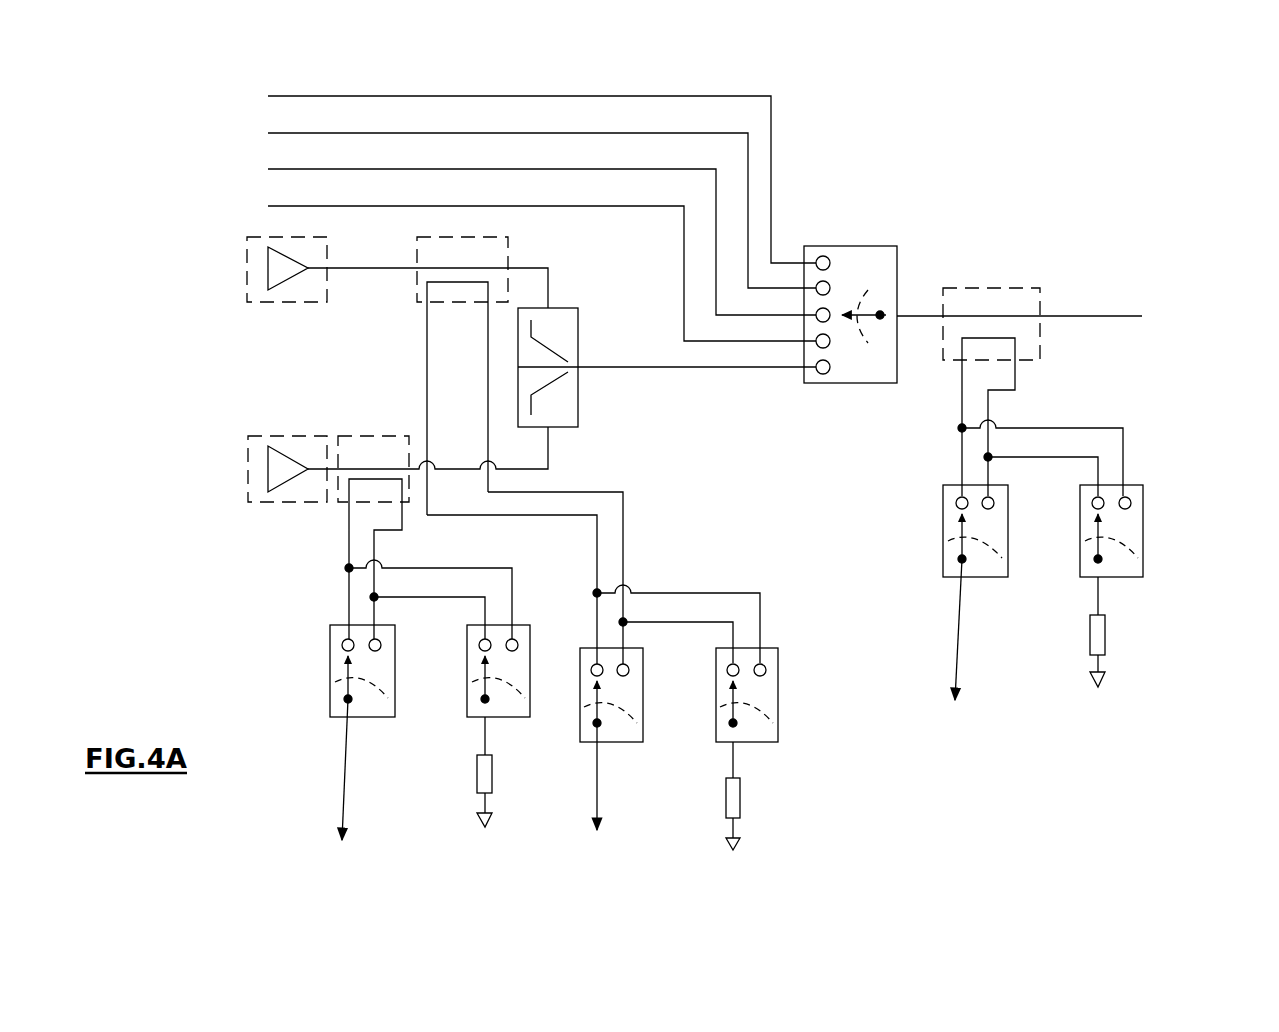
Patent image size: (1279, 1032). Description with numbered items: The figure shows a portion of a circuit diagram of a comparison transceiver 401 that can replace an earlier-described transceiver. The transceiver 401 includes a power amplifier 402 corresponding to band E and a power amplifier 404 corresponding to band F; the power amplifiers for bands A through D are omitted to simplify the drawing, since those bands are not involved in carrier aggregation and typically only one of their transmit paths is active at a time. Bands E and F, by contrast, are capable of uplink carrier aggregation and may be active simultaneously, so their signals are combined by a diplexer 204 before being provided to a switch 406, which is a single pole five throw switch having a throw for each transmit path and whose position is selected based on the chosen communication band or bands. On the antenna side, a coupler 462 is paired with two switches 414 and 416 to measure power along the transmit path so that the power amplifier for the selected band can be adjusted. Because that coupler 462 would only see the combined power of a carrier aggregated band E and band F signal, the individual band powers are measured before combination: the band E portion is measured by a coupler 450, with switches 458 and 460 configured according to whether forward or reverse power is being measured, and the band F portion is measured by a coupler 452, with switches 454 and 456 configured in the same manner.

The transceiver 401 is at (847, 58).
The power amplifier 402 is at (278, 320).
The power amplifier 404 is at (268, 512).
The switch 406 is at (910, 247).
The diplexer 204 is at (583, 313).
The coupler 450 is at (510, 250).
The coupler 452 is at (373, 427).
The switch 454 is at (318, 672).
The switch 456 is at (468, 725).
The switch 458 is at (583, 750).
The switch 460 is at (718, 750).
The coupler 462 is at (1043, 285).
The switch 414 is at (932, 535).
The switch 416 is at (1170, 535).